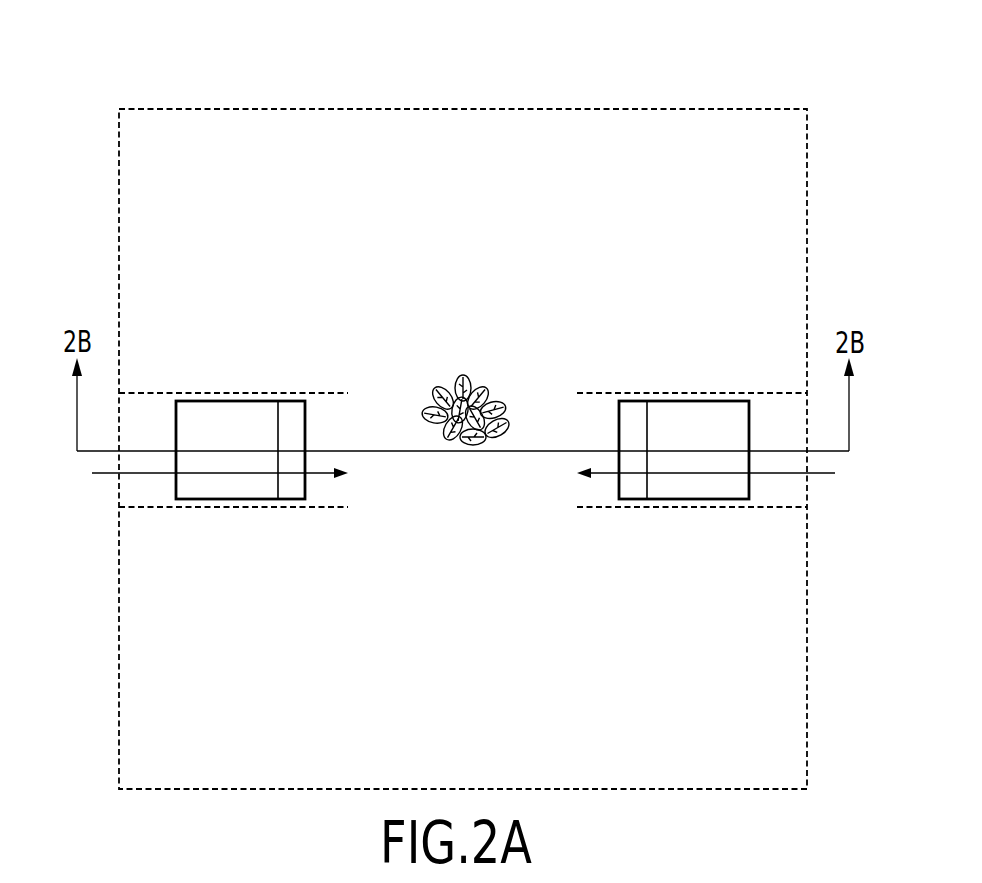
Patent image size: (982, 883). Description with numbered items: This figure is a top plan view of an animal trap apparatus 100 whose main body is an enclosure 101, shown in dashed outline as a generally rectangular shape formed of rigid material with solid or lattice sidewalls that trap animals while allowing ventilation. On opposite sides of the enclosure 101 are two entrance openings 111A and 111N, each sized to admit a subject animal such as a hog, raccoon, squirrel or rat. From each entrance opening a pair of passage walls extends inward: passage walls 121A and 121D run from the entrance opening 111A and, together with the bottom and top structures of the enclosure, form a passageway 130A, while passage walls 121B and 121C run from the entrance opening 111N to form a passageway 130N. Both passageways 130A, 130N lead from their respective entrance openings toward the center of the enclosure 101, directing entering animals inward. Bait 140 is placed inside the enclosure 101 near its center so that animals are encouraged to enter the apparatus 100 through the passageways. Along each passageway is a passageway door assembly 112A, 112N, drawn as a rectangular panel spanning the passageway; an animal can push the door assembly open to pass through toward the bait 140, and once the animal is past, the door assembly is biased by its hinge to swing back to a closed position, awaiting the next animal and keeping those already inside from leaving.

The animal trap apparatus 100 is at (138, 38).
The enclosure 101 is at (807, 142).
The entrance opening 111A is at (119, 493).
The entrance opening 111N is at (807, 492).
The passageway door assembly 112A is at (213, 500).
The passageway door assembly 112N is at (715, 500).
The passage wall 121A is at (327, 393).
The passage wall 121B is at (603, 393).
The passage wall 121C is at (603, 507).
The passage wall 121D is at (327, 507).
The passageway 130A is at (190, 472).
The passageway 130N is at (736, 472).
The bait 140 is at (463, 377).